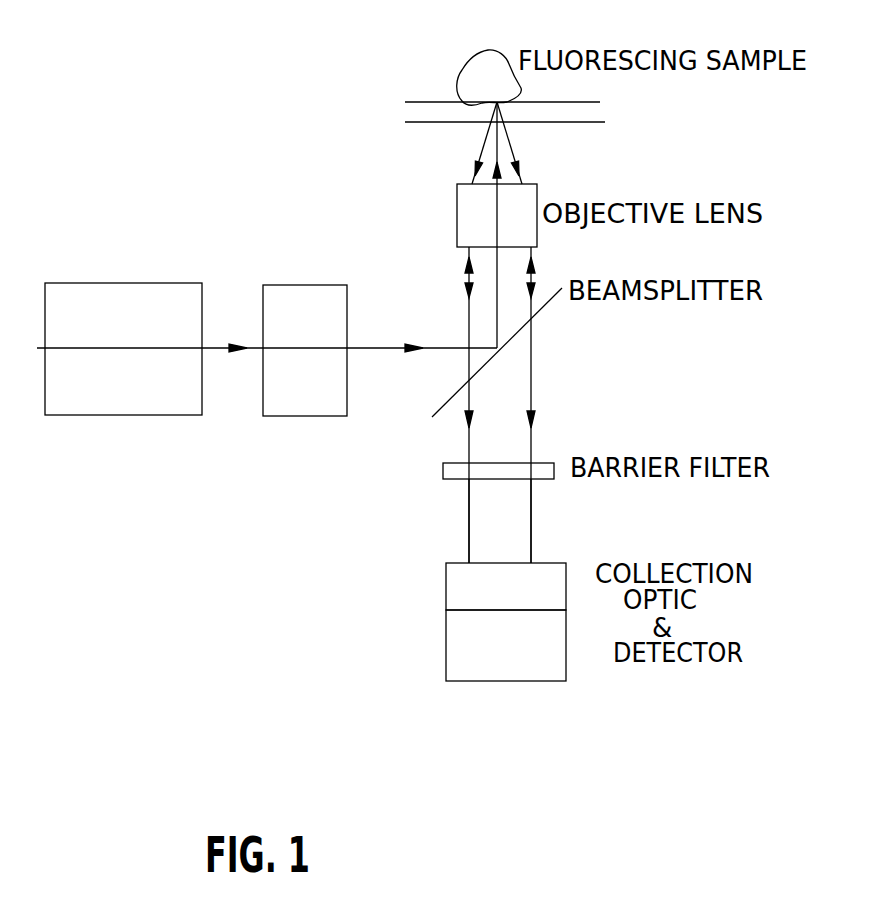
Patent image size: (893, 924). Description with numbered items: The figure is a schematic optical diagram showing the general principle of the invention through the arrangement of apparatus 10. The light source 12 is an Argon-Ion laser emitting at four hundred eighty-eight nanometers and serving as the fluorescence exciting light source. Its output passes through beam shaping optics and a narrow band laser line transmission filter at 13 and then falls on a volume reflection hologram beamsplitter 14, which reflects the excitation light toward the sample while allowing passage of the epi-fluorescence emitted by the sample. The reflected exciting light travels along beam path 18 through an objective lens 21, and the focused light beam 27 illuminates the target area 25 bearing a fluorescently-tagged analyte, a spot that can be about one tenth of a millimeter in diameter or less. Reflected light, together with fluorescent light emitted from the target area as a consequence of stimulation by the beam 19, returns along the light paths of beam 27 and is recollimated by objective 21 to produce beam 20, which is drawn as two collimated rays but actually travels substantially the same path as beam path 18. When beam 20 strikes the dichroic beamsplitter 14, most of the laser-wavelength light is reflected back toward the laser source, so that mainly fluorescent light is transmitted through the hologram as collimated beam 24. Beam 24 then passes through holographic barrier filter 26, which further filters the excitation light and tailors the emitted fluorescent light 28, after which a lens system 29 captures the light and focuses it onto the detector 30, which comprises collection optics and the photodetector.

The apparatus 10 is at (142, 508).
The light source 12 is at (88, 404).
The beam shaping optics and narrow band laser line transmission filter 13 is at (331, 417).
The volume reflection hologram beamsplitter 14 is at (540, 312).
The beam path 18 is at (483, 262).
The beam 19 is at (481, 158).
The beam 20 is at (468, 326).
The objective lens 21 is at (538, 197).
The collimated beam 24 is at (468, 448).
The target area 25 is at (470, 102).
The holographic barrier filter 26 is at (550, 480).
The focused light beam 27 is at (503, 138).
The emitted fluorescent light 28 is at (468, 545).
The lens system 29 is at (446, 587).
The detector 30 is at (455, 648).